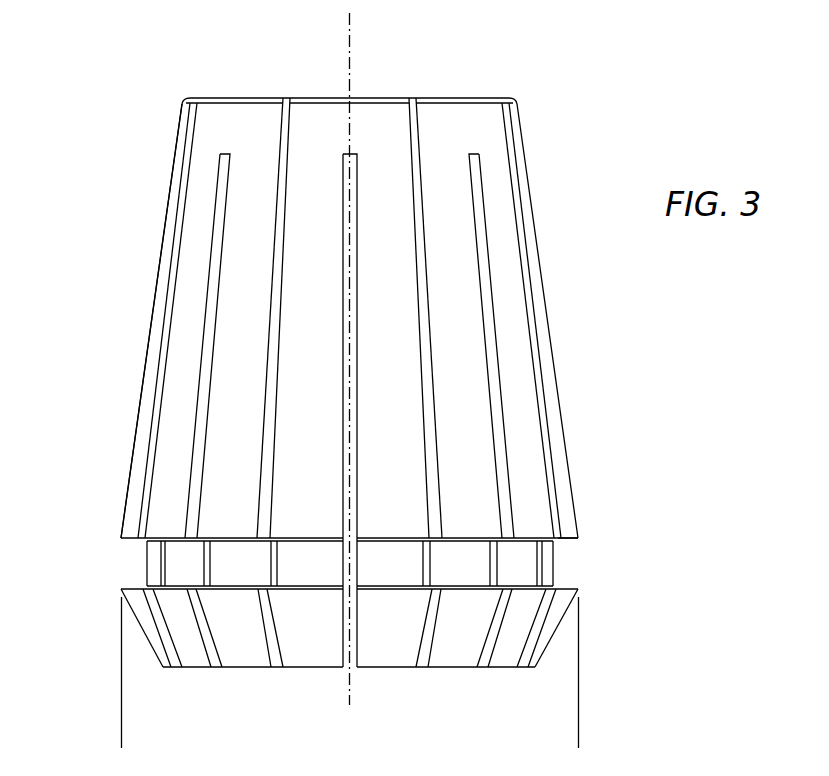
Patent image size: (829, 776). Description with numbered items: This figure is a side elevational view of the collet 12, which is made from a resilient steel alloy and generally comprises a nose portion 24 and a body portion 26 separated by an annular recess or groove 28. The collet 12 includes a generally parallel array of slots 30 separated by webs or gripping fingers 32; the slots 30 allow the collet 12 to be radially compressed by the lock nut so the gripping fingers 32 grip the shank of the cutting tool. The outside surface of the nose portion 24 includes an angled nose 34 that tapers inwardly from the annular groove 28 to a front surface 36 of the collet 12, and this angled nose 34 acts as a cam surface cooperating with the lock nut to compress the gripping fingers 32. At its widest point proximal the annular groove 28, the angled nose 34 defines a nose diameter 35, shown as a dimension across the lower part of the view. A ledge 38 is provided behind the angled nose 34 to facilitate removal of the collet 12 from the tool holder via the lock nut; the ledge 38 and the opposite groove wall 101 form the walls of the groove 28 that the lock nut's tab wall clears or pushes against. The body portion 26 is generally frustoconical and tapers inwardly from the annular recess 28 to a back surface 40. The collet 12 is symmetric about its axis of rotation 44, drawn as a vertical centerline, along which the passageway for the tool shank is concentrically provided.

The collet 12 is at (558, 347).
The nose portion 24 is at (342, 630).
The body portion 26 is at (156, 151).
The annular groove 28 is at (147, 564).
The slots 30 is at (410, 98).
The gripping fingers 32 is at (320, 339).
The angled nose 34 is at (557, 632).
The nose diameter 35 is at (578, 737).
The front surface 36 is at (448, 668).
The ledge 38 is at (567, 588).
The back surface 40 is at (478, 98).
The axis of rotation 44 is at (348, 28).
The groove wall 101 is at (572, 540).